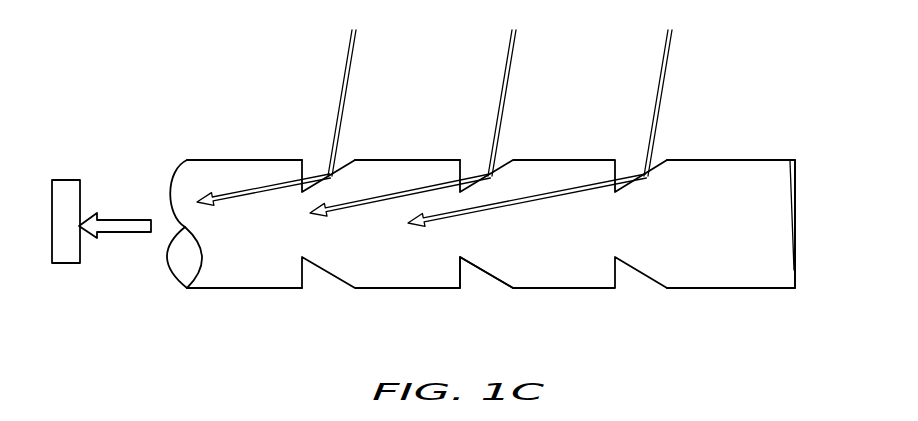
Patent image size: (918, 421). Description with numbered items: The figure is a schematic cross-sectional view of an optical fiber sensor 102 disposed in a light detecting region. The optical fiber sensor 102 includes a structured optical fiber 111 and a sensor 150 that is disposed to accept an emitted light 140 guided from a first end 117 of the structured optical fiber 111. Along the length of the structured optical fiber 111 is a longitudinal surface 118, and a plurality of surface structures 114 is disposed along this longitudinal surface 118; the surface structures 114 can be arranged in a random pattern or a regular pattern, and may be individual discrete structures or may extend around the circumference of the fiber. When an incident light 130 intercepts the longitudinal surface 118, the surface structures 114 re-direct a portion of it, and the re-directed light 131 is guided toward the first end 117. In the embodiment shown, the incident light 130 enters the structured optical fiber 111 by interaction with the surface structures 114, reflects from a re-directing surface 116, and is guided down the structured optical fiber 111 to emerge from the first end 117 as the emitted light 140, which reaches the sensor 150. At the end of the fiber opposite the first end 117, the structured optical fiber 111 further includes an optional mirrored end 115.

The optical fiber sensor 102 is at (147, 98).
The structured optical fiber 111 is at (229, 290).
The surface structures 114 is at (478, 280).
The mirrored end 115 is at (793, 175).
The re-directing surface 116 is at (645, 277).
The first end 117 is at (165, 277).
The longitudinal surface 118 is at (407, 158).
The incident light 130 is at (353, 62).
The re-directed light 131 is at (240, 195).
The emitted light 140 is at (123, 227).
The sensor 150 is at (67, 192).